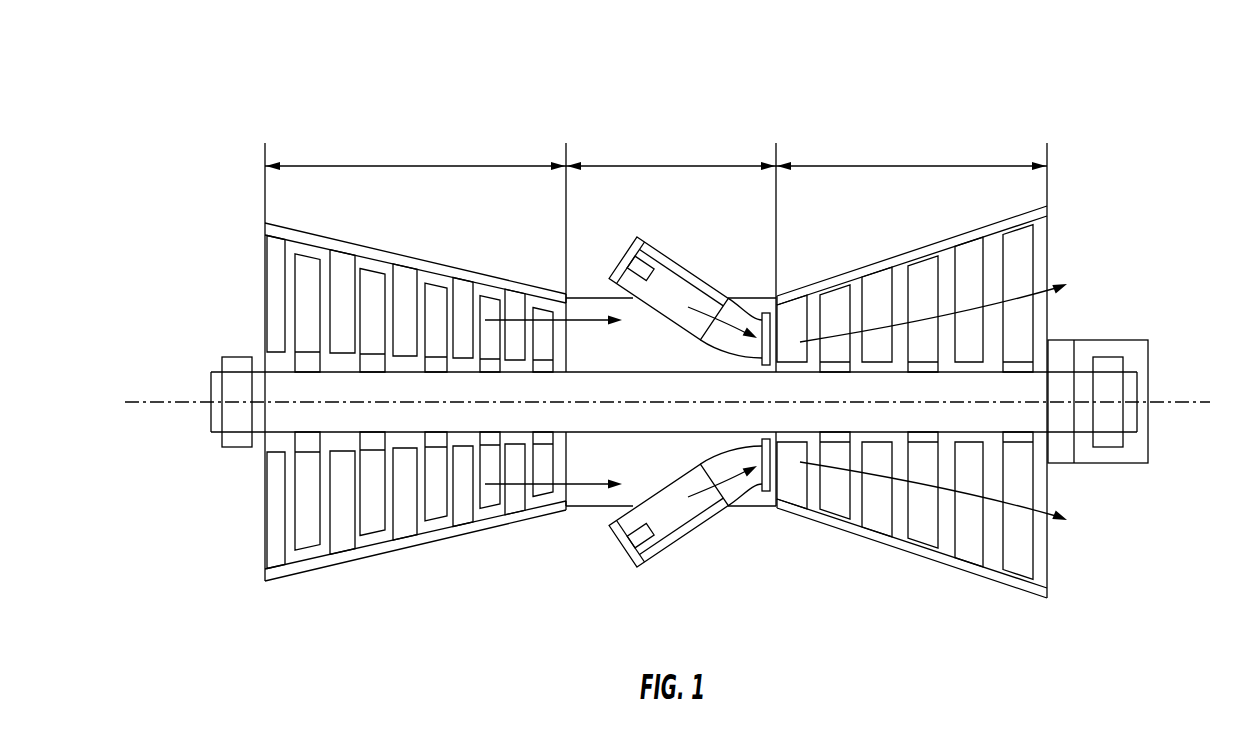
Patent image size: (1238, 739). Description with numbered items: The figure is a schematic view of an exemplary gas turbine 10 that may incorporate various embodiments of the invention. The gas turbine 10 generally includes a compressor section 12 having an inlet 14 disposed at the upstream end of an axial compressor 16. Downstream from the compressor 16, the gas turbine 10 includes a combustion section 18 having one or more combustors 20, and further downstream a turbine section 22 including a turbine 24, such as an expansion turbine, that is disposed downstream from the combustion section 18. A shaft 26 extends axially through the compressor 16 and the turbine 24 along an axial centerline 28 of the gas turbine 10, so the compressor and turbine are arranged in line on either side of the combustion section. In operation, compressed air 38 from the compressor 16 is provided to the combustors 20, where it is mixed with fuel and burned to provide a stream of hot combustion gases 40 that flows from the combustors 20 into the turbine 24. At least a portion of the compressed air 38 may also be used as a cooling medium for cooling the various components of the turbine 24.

The gas turbine 10 is at (590, 80).
The compressor section 12 is at (417, 165).
The inlet 14 is at (264, 308).
The axial compressor 16 is at (284, 582).
The combustion section 18 is at (635, 165).
The combustor 20 is at (659, 247).
The turbine section 22 is at (859, 165).
The turbine 24 is at (888, 550).
The shaft 26 is at (596, 382).
The axial centerline 28 is at (171, 402).
The compressed air 38 is at (578, 318).
The hot combustion gases 40 is at (698, 314).